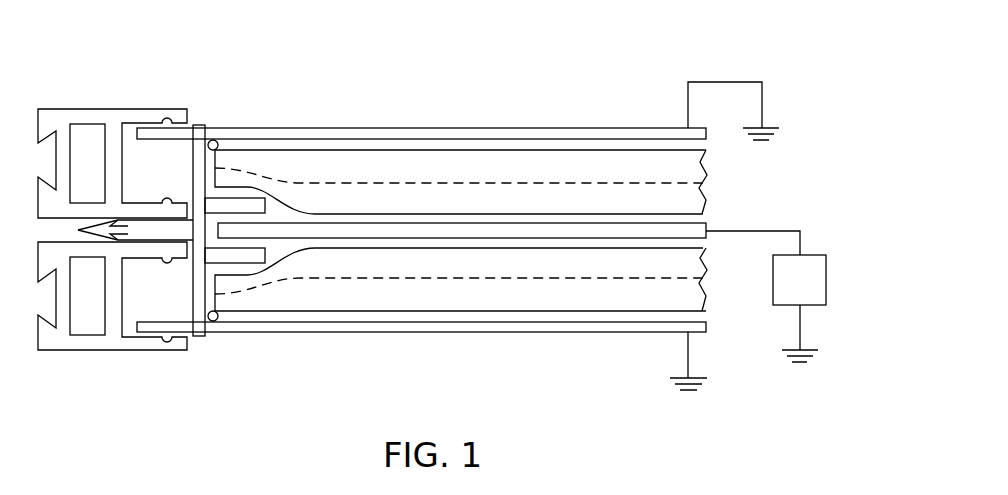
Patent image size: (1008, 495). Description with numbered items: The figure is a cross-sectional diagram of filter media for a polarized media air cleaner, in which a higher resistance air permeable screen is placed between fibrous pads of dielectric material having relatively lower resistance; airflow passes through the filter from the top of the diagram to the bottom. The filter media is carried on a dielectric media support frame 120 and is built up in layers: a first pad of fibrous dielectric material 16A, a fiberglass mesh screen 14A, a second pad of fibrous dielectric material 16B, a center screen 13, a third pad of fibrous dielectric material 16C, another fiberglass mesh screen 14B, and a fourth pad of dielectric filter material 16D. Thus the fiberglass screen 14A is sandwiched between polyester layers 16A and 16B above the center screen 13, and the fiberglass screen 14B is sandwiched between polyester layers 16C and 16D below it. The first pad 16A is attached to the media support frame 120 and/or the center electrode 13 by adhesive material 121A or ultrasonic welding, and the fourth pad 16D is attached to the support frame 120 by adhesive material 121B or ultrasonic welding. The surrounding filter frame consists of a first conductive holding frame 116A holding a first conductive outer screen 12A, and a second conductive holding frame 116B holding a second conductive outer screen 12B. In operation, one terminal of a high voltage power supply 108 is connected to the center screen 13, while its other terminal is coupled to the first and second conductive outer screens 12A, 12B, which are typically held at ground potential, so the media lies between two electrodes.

The first conductive outer screen 12A is at (325, 128).
The second conductive outer screen 12B is at (308, 332).
The center screen 13 is at (652, 224).
The fiberglass mesh screen 14A is at (477, 183).
The fiberglass mesh screen 14B is at (460, 279).
The first pad of fibrous dielectric material 16A is at (405, 168).
The second pad of fibrous dielectric material 16B is at (553, 203).
The third pad of fibrous dielectric material 16C is at (555, 265).
The fourth pad of dielectric filter material 16D is at (382, 303).
The high voltage power supply 108 is at (828, 270).
The first conductive holding frame 116A is at (93, 108).
The second conductive holding frame 116B is at (95, 351).
The dielectric media support frame 120 is at (197, 139).
The adhesive material 121A is at (215, 141).
The adhesive material 121B is at (212, 322).